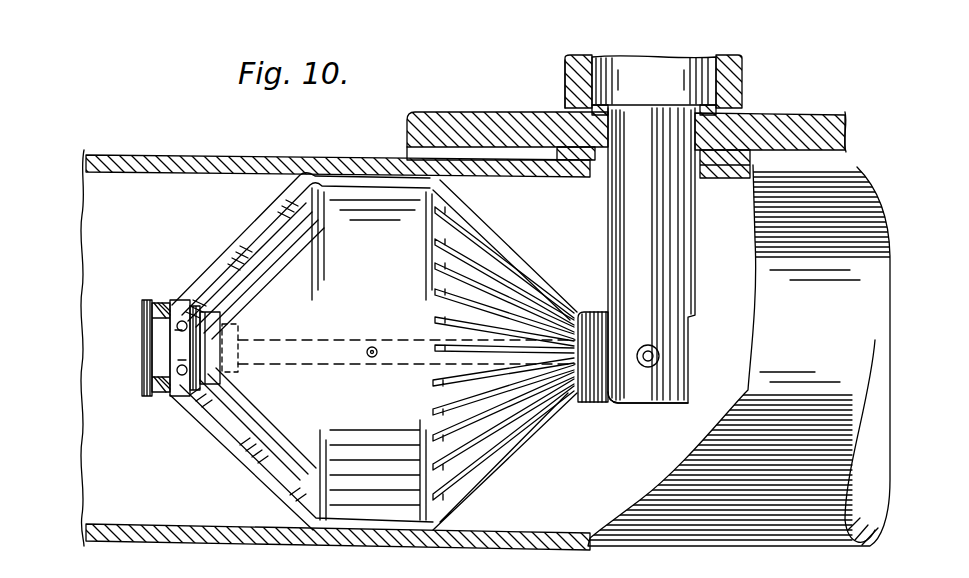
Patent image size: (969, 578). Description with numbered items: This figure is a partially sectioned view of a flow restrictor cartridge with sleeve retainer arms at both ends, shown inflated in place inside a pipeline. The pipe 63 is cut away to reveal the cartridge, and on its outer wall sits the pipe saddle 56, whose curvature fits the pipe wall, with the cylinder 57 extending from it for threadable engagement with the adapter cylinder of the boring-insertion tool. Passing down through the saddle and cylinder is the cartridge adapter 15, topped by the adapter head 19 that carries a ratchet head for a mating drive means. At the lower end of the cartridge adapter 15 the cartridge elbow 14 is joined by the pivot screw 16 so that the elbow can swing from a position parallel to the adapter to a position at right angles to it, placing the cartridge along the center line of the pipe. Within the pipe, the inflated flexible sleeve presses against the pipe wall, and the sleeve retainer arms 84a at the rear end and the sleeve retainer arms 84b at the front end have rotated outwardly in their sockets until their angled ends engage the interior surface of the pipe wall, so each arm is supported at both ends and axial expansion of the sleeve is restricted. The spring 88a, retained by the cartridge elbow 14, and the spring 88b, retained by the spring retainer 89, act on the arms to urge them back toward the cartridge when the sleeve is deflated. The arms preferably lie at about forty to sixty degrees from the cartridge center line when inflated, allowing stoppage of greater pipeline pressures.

The cartridge elbow 14 is at (616, 404).
The cartridge adapter 15 is at (682, 222).
The pivot screw 16 is at (658, 360).
The adapter head 19 is at (688, 68).
The pipe saddle 56 is at (805, 122).
The cylinder 57 is at (565, 68).
The pipe 63 is at (340, 157).
The sleeve retainer arms (rear end) 84a is at (508, 243).
The sleeve retainer arms (front end) 84b is at (240, 244).
The spring (rear) 88a is at (586, 404).
The spring (front) 88b is at (158, 398).
The spring retainer 89 is at (142, 344).